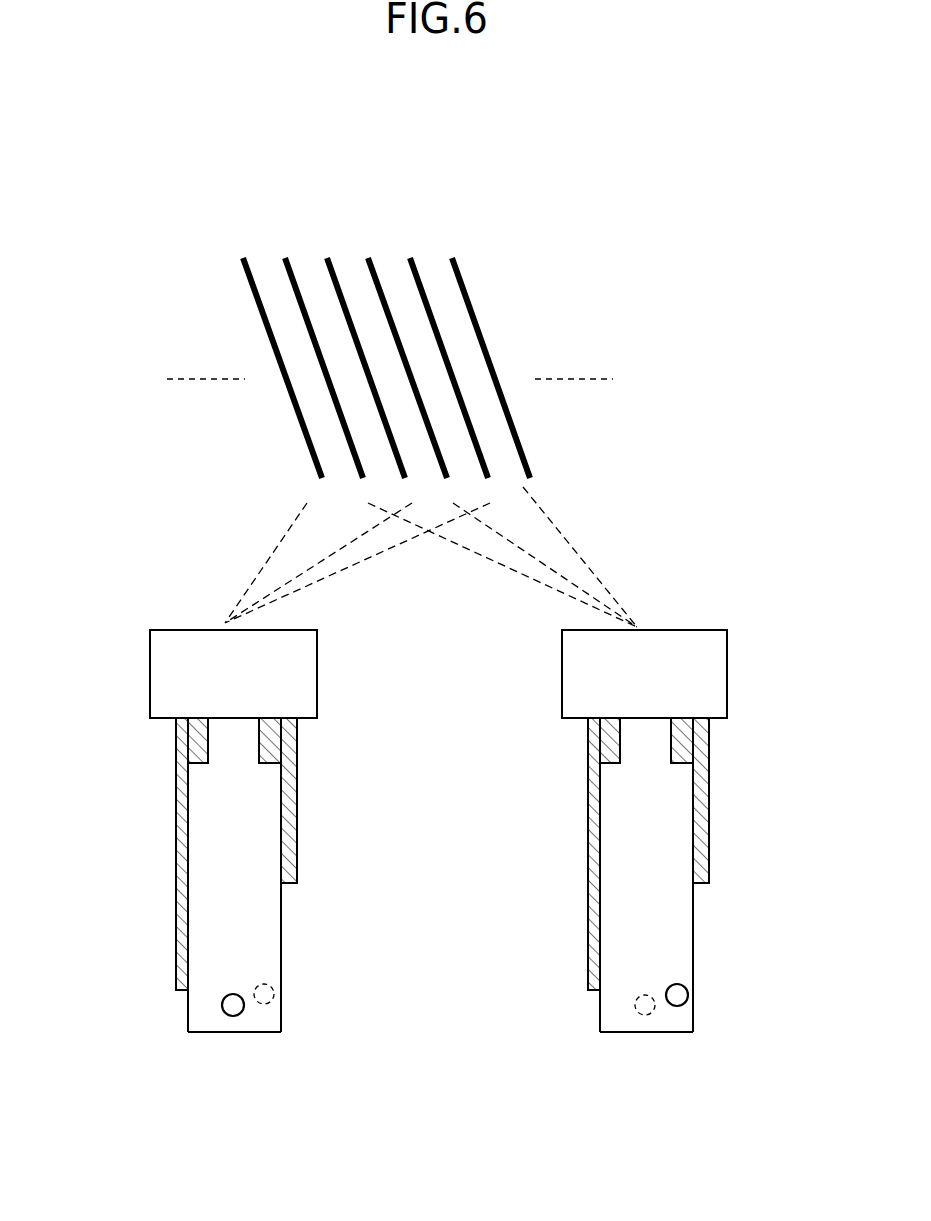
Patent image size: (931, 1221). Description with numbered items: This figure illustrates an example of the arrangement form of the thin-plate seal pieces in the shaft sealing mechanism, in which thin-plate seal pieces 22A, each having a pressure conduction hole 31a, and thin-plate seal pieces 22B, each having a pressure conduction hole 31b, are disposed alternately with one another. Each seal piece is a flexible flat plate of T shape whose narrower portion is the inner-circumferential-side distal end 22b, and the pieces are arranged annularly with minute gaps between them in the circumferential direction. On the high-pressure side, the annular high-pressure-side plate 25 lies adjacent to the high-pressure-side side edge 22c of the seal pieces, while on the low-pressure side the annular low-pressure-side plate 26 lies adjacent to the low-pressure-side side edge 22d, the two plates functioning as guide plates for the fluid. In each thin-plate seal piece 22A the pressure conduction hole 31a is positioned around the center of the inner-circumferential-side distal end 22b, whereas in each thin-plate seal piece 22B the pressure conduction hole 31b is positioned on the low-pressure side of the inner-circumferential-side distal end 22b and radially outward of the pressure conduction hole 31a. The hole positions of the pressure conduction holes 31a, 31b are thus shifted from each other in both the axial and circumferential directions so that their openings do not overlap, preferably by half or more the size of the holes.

The thin-plate seal piece 22A is at (250, 266).
The thin-plate seal piece 22B is at (295, 265).
The high-pressure-side plate 25 is at (176, 805).
The low-pressure-side plate 26 is at (298, 796).
The inner-circumferential-side distal end 22b is at (197, 1033).
The high-pressure-side side edge 22c is at (188, 1010).
The low-pressure-side side edge 22d is at (281, 932).
The pressure conduction hole 31a is at (231, 1016).
The pressure conduction hole 31b is at (265, 1005).